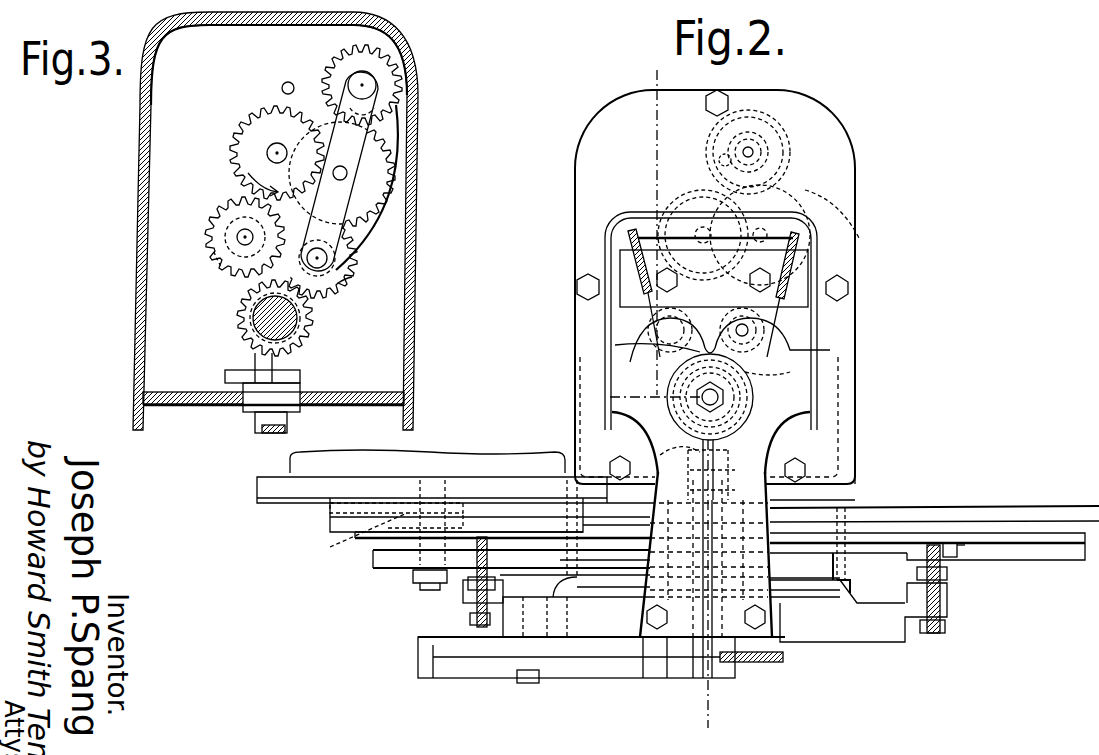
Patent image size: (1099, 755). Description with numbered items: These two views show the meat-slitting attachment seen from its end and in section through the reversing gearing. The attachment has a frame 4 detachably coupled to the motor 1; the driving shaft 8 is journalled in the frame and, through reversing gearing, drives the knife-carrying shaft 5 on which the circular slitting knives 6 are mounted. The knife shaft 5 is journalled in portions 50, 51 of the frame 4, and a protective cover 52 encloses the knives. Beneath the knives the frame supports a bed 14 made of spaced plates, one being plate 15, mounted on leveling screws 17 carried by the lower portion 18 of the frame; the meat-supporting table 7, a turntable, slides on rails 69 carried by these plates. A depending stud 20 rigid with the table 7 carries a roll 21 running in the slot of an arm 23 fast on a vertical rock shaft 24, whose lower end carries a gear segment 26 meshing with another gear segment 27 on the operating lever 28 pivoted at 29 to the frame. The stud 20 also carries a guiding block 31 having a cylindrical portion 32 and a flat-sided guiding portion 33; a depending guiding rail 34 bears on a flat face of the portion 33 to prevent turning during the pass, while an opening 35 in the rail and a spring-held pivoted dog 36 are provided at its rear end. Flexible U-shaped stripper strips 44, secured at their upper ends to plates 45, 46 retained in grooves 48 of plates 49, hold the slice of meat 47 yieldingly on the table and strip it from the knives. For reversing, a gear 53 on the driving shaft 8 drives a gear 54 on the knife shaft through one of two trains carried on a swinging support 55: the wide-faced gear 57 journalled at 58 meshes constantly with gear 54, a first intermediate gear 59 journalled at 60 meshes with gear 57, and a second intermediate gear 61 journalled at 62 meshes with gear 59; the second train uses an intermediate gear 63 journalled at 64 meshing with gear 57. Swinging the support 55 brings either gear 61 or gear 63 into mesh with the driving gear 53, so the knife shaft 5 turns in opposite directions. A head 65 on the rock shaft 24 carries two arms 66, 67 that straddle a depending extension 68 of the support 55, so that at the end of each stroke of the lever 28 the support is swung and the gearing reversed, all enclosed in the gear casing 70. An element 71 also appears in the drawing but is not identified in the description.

In FIG. 2, the motor 1 is at (659, 399).
In FIG. 3, the frame 4 is at (133, 413).
In FIG. 2, the frame 4 is at (852, 480).
In FIG. 3, the knife-carrying shaft 5 is at (268, 318).
In FIG. 2, the knife-carrying shaft 5 is at (700, 395).
In FIG. 2, the circular slitting knives 6 is at (785, 440).
In FIG. 2, the meat-supporting table 7 is at (300, 488).
In FIG. 3, the driving shaft 8 is at (270, 153).
In FIG. 2, the driving shaft 8 is at (695, 198).
In FIG. 2, the bed 14 is at (955, 525).
In FIG. 2, the plate 15 is at (1047, 530).
In FIG. 2, the leveling screws 17 is at (467, 555).
In FIG. 2, the lower portion of the frame 18 is at (510, 620).
In FIG. 2, the depending stud 20 is at (420, 488).
In FIG. 2, the roll 21 is at (410, 570).
In FIG. 2, the arm 23 is at (603, 565).
In FIG. 3, the vertical rock shaft 24 is at (262, 425).
In FIG. 2, the vertical rock shaft 24 is at (735, 545).
In FIG. 2, the gear segment 26 is at (677, 668).
In FIG. 2, the gear segment 27 is at (467, 672).
In FIG. 2, the operating lever 28 is at (768, 665).
In FIG. 2, the pivot 29 is at (527, 620).
In FIG. 2, the guiding block 31 is at (330, 507).
In FIG. 2, the cylindrical portion 32 is at (352, 537).
In FIG. 2, the flat-sided guiding portion 33 is at (387, 532).
In FIG. 2, the depending guiding rail 34 is at (510, 540).
In FIG. 2, the opening 35 is at (962, 552).
In FIG. 2, the dog 36 is at (948, 555).
In FIG. 2, the flexible U-shaped strips 44 is at (615, 345).
In FIG. 2, the supporting plate 45 is at (612, 243).
In FIG. 2, the supporting plate 46 is at (812, 236).
In FIG. 2, the meat 47 is at (440, 462).
In FIG. 2, the grooves 48 is at (625, 262).
In FIG. 2, the plates 49 is at (805, 285).
In FIG. 2, the frame portion 50 is at (800, 400).
In FIG. 2, the frame portion 51 is at (795, 340).
In FIG. 2, the protective cover 52 is at (800, 224).
In FIG. 3, the driving gear 53 is at (233, 127).
In FIG. 2, the driving gear 53 is at (710, 172).
In FIG. 3, the knife shaft gear 54 is at (313, 324).
In FIG. 2, the knife shaft gear 54 is at (780, 372).
In FIG. 3, the swinging support 55 is at (388, 213).
In FIG. 2, the swinging support 55 is at (820, 262).
In FIG. 3, the wide-faced gear 57 is at (352, 277).
In FIG. 2, the wide-faced gear 57 is at (795, 325).
In FIG. 3, the journal 58 is at (317, 258).
In FIG. 2, the journal 58 is at (800, 310).
In FIG. 3, the first intermediate gear 59 is at (383, 150).
In FIG. 2, the first intermediate gear 59 is at (795, 168).
In FIG. 3, the journal 60 is at (347, 173).
In FIG. 2, the journal 60 is at (808, 212).
In FIG. 3, the second intermediate gear 61 is at (392, 77).
In FIG. 2, the second intermediate gear 61 is at (790, 110).
In FIG. 3, the journal 62 is at (357, 82).
In FIG. 2, the journal 62 is at (735, 140).
In FIG. 3, the intermediate gear 63 is at (217, 258).
In FIG. 2, the intermediate gear 63 is at (615, 335).
In FIG. 3, the journal 64 is at (240, 236).
In FIG. 2, the journal 64 is at (615, 312).
In FIG. 3, the head 65 is at (303, 387).
In FIG. 3, the arm 66 is at (287, 372).
In FIG. 2, the arm 66 is at (650, 452).
In FIG. 3, the arm 67 is at (236, 363).
In FIG. 2, the arm 67 is at (745, 405).
In FIG. 3, the depending extension 68 is at (247, 405).
In FIG. 2, the depending extension 68 is at (755, 492).
In FIG. 2, the rails 69 is at (997, 522).
In FIG. 3, the gear casing 70 is at (138, 213).
In FIG. 2, the gear casing 70 is at (838, 118).
In FIG. 3, the stop pin 71 is at (288, 82).
In FIG. 2, the stop pin 71 is at (719, 156).